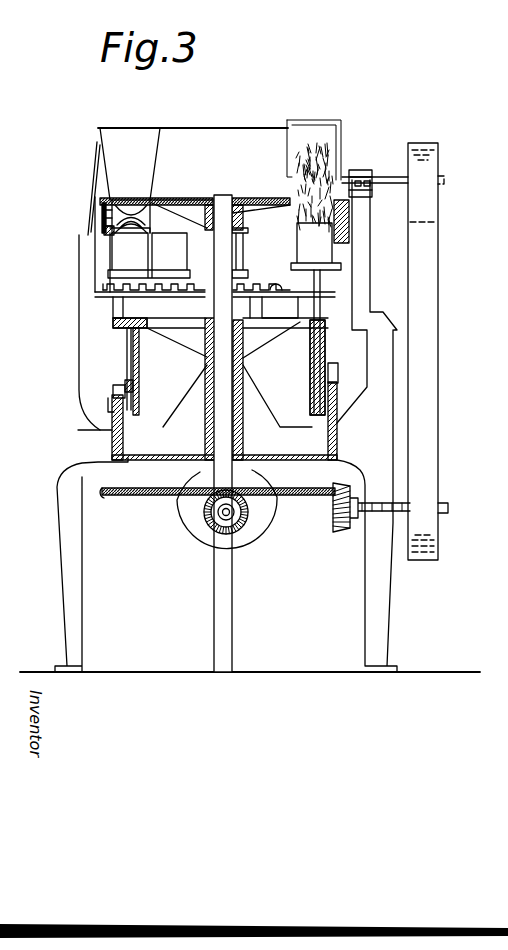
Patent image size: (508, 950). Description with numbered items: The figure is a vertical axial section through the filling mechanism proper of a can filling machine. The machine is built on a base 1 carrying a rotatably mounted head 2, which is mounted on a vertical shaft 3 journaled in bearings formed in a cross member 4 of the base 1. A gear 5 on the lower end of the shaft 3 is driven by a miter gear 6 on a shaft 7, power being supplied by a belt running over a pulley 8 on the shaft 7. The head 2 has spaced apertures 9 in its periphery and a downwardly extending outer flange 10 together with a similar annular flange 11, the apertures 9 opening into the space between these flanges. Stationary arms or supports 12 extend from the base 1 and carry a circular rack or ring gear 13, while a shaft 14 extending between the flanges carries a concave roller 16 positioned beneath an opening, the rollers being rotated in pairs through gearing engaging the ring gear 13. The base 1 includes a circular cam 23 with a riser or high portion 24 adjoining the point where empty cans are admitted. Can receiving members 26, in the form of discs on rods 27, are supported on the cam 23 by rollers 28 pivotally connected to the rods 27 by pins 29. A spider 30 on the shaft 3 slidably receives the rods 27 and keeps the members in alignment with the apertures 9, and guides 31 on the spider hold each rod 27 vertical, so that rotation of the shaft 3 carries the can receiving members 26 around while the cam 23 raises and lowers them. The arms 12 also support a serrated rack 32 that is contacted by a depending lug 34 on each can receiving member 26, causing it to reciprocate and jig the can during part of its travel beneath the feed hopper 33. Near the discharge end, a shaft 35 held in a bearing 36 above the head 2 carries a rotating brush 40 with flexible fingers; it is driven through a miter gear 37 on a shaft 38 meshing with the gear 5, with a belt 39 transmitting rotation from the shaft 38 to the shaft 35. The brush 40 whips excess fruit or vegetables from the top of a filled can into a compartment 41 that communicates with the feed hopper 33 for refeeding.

The base 1 is at (62, 582).
The head 2 is at (200, 198).
The vertical shaft 3 is at (225, 200).
The cross member 4 is at (185, 445).
The gear 5 is at (108, 497).
The miter gear 6 is at (210, 518).
The shaft 7 is at (226, 516).
The pulley 8 is at (258, 540).
The apertures 9 is at (132, 200).
The flange 10 is at (108, 200).
The annular flange 11 is at (152, 200).
The stationary arms or supports 12 is at (79, 357).
The circular rack or ring gear 13 is at (104, 230).
The shaft 14 is at (102, 210).
The concave roller 16 is at (113, 240).
The circular cam 23 is at (113, 413).
The riser or high portion 24 is at (110, 431).
The can receiving members 26 is at (115, 278).
The rods 27 is at (116, 306).
The rollers 28 is at (115, 388).
The pins 29 is at (133, 390).
The spider 30 is at (157, 323).
The guides 31 is at (125, 340).
The serrated rack 32 is at (277, 290).
The feed hopper 33 is at (258, 140).
The depending lug 34 is at (103, 285).
The shaft 35 is at (388, 178).
The bearing 36 is at (360, 170).
The miter gear 37 is at (340, 530).
The shaft 38 is at (448, 508).
The belt 39 is at (437, 418).
The rotating brush 40 is at (318, 140).
The compartment 41 is at (307, 134).